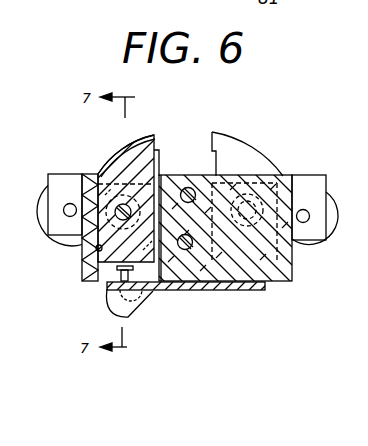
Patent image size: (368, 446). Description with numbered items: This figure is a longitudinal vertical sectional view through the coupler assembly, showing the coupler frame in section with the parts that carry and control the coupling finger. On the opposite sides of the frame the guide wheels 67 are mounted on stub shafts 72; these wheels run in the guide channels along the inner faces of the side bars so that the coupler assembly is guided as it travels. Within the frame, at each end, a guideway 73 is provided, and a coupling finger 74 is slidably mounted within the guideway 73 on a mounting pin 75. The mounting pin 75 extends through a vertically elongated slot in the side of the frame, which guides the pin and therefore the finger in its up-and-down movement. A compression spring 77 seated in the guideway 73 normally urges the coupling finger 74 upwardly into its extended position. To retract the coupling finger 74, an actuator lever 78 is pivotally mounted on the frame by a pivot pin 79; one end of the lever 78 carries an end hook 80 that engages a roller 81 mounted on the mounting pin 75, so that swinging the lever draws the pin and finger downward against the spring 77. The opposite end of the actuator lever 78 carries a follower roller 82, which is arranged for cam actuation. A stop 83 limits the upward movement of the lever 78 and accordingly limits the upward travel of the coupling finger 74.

The guide wheel 67 is at (43, 203).
The stub shaft 72 is at (64, 215).
The guideway 73 is at (100, 252).
The coupling finger 74 is at (128, 143).
The mounting pin 75 is at (99, 257).
The compression spring 77 is at (114, 268).
The actuator lever 78 is at (150, 291).
The pivot pin 79 is at (190, 252).
The end hook 80 is at (265, 174).
The roller 81 is at (288, 176).
The follower roller 82 is at (151, 313).
The stop 83 is at (191, 188).